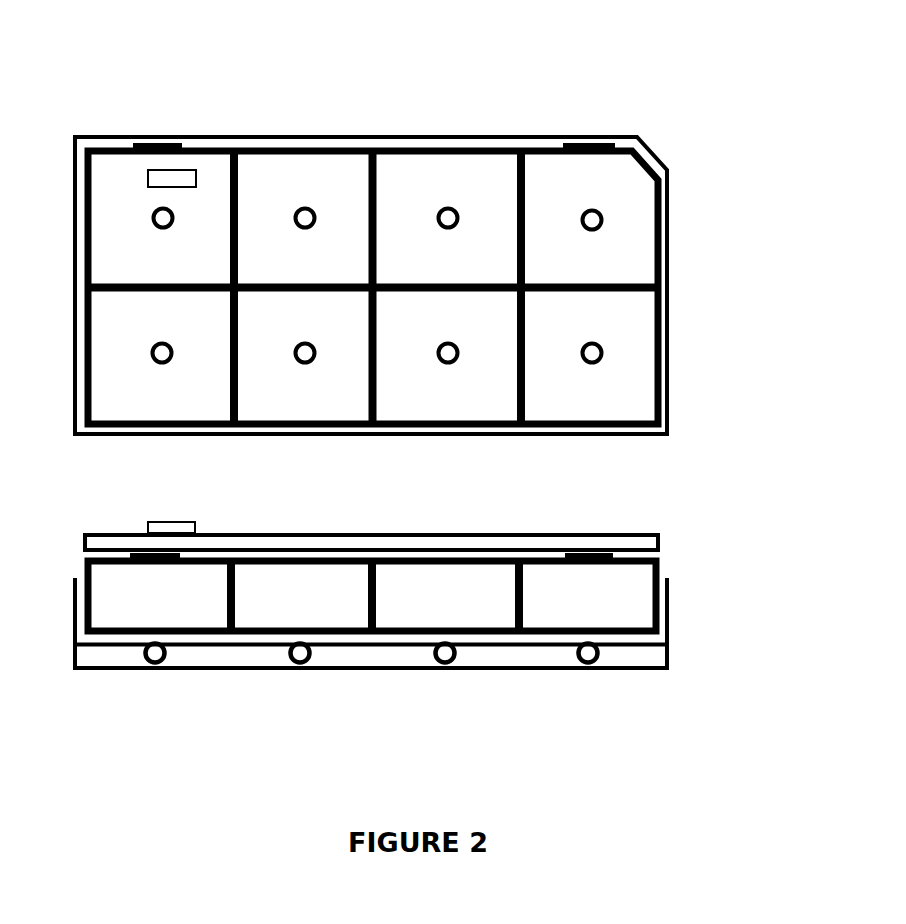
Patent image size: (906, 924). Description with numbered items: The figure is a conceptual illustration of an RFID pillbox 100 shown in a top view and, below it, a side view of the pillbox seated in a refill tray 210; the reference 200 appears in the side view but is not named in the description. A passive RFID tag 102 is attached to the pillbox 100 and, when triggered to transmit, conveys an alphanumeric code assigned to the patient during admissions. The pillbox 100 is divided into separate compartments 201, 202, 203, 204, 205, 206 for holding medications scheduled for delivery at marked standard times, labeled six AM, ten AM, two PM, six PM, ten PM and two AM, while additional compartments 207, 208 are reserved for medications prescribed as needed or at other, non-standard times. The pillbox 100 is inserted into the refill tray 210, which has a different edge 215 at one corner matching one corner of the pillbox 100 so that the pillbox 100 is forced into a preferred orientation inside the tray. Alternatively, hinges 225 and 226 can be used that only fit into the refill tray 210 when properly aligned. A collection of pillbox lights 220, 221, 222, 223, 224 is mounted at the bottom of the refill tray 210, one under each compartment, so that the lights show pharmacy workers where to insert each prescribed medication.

The RFID pillbox 100 is at (352, 150).
The passive RFID tag 102 is at (195, 172).
The lid 200 is at (630, 545).
The compartment 201 is at (133, 195).
The compartment 202 is at (338, 192).
The compartment 203 is at (437, 192).
The compartment 204 is at (170, 403).
The compartment 205 is at (315, 403).
The compartment 206 is at (462, 405).
The additional compartment 207 is at (608, 405).
The additional compartment 208 is at (557, 192).
The refill tray 210 is at (670, 653).
The different edge 215 is at (658, 157).
The pillbox light 220 is at (605, 358).
The pillbox light 221 is at (452, 668).
The pillbox light 222 is at (307, 665).
The pillbox light 223 is at (158, 663).
The pillbox light 224 is at (605, 228).
The hinge 225 is at (595, 143).
The hinge 226 is at (158, 143).